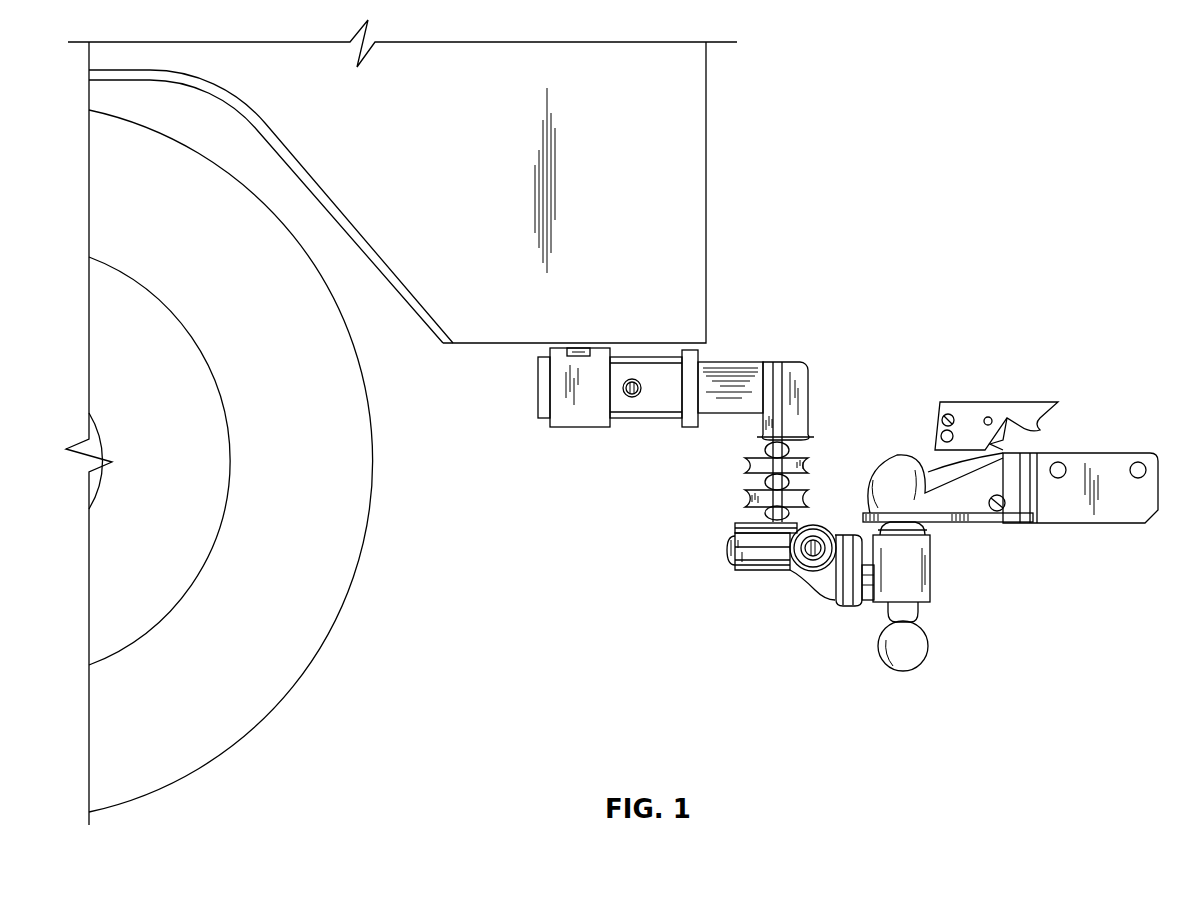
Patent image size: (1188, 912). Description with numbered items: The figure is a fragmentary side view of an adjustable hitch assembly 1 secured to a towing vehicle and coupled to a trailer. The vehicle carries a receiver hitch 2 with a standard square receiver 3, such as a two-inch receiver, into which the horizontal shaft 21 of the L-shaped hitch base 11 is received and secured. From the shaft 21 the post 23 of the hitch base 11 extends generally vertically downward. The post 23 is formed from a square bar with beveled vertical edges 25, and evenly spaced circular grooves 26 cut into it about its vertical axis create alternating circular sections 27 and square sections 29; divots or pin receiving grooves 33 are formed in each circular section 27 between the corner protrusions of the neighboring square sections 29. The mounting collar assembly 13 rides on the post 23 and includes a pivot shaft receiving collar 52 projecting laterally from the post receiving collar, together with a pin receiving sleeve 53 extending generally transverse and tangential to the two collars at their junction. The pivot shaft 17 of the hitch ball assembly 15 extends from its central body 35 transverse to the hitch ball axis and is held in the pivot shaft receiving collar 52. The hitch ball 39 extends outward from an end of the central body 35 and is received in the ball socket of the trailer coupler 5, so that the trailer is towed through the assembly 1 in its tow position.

The adjustable hitch assembly 1 is at (922, 102).
The receiver hitch 2 is at (584, 437).
The square receiver 3 is at (655, 400).
The coupler 5 is at (1030, 390).
The hitch base 11 is at (722, 395).
The mounting collar assembly 13 is at (770, 560).
The hitch ball assembly 15 is at (925, 587).
The pivot shaft 17 is at (868, 592).
The shaft 21 is at (724, 368).
The post 23 is at (803, 402).
The beveled vertical edges 25 is at (777, 364).
The circular grooves 26 is at (750, 458).
The circular sections 27 is at (800, 452).
The square sections 29 is at (750, 498).
The pin receiving grooves 33 is at (783, 483).
The central body 35 is at (930, 543).
The second hitch ball 39 is at (920, 636).
The pivot shaft receiving collar 52 is at (843, 600).
The pin receiving sleeve 53 is at (822, 535).